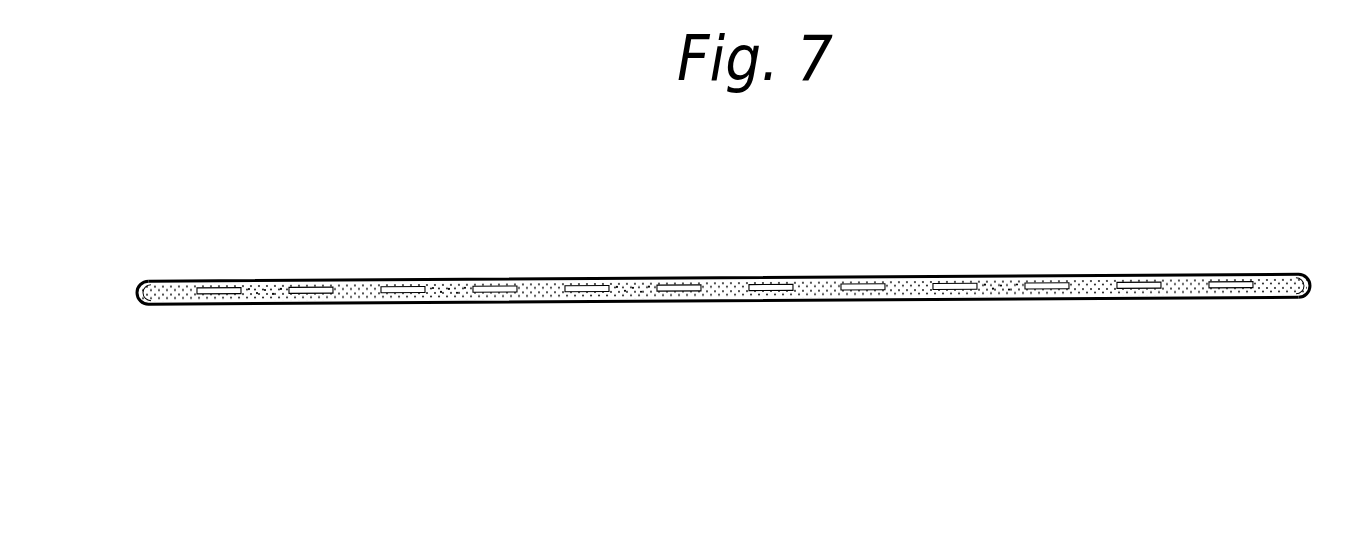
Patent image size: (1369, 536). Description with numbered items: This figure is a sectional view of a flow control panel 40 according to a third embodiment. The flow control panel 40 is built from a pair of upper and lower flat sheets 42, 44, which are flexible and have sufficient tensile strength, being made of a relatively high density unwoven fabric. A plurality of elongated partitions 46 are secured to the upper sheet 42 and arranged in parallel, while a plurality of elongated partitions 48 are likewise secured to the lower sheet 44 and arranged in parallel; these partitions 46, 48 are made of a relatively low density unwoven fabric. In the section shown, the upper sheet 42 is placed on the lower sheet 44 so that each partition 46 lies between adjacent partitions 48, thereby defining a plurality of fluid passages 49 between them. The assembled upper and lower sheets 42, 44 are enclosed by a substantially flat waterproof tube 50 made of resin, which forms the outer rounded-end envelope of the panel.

The flow control panel 40 is at (687, 215).
The upper flat sheet 42 is at (768, 280).
The lower flat sheet 44 is at (552, 305).
The elongated partitions 46 is at (441, 283).
The elongated partitions 48 is at (370, 292).
The fluid passages 49 is at (313, 292).
The waterproof tube 50 is at (164, 294).